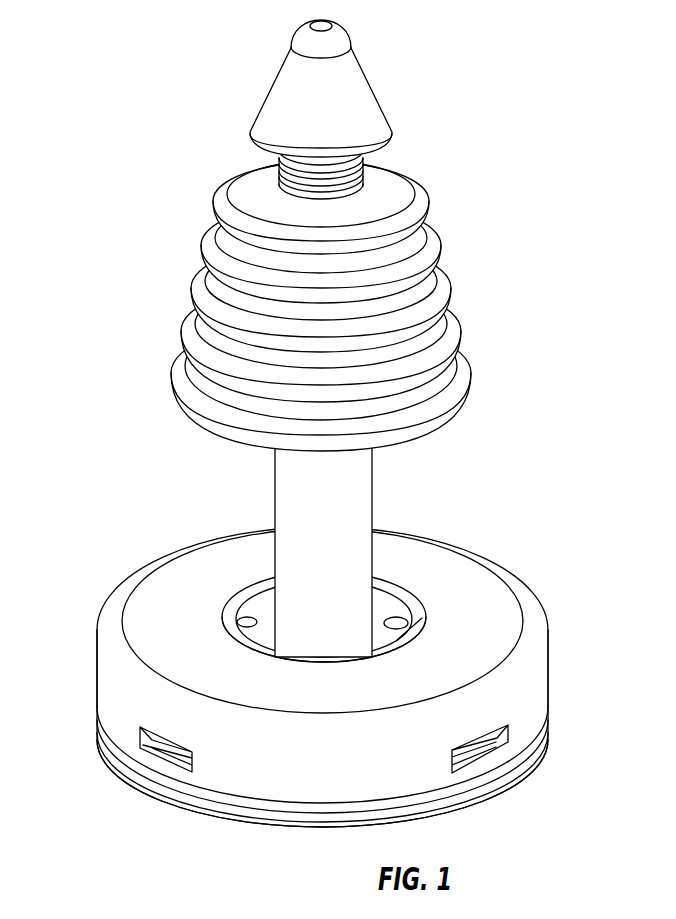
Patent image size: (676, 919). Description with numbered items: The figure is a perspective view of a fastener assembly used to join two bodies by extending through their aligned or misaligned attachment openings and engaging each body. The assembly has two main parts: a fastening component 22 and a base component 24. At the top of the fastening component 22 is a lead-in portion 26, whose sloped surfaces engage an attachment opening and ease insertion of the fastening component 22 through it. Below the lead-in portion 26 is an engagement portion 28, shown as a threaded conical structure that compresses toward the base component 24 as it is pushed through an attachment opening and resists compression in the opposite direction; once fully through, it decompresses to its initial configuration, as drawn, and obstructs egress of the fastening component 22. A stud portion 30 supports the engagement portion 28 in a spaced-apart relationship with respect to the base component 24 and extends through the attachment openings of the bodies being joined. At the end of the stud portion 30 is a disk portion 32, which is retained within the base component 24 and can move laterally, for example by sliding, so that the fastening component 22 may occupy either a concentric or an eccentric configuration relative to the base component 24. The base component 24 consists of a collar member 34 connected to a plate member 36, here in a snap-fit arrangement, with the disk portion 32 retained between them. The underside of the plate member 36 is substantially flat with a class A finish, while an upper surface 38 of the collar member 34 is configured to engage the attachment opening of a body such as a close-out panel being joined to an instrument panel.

The fastening component 22 is at (315, 341).
The base component 24 is at (320, 697).
The lead-in portion 26 is at (351, 88).
The engagement portion 28 is at (481, 184).
The stud portion 30 is at (360, 473).
The disk portion 32 is at (403, 620).
The collar member 34 is at (112, 655).
The plate member 36 is at (312, 823).
The upper surface 38 is at (148, 617).